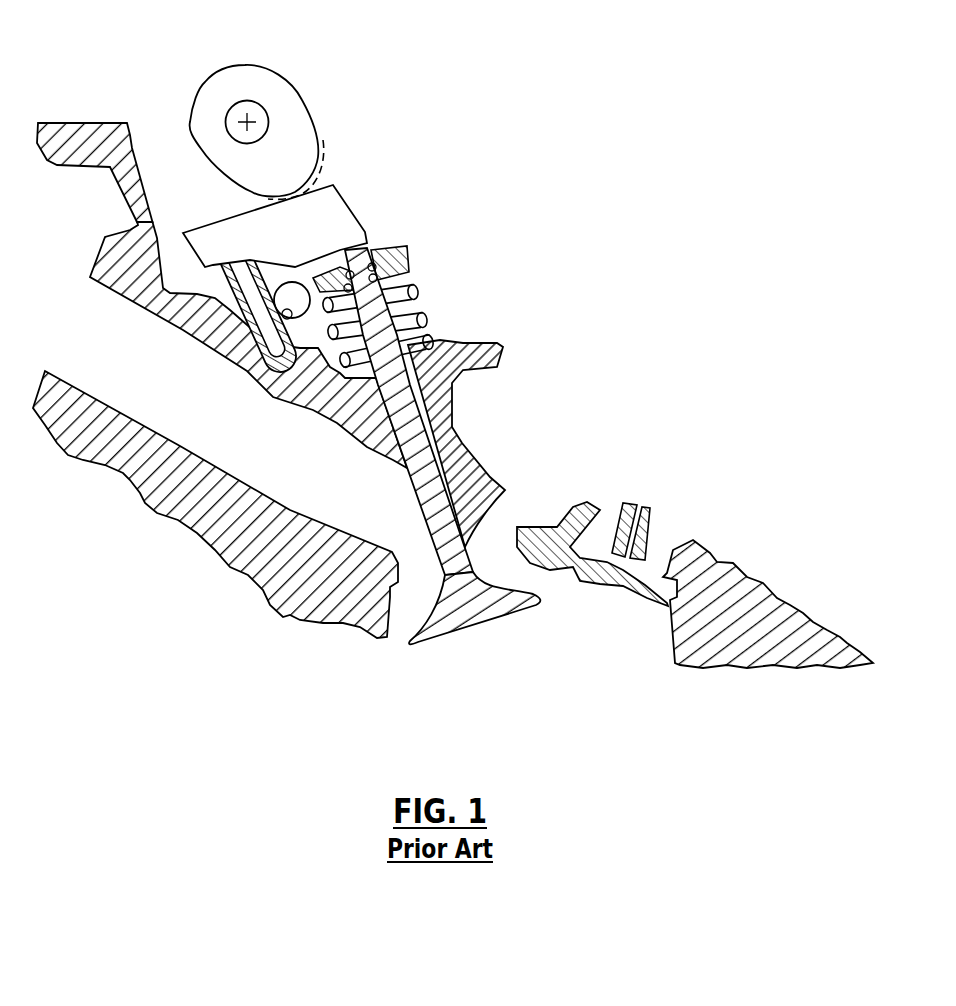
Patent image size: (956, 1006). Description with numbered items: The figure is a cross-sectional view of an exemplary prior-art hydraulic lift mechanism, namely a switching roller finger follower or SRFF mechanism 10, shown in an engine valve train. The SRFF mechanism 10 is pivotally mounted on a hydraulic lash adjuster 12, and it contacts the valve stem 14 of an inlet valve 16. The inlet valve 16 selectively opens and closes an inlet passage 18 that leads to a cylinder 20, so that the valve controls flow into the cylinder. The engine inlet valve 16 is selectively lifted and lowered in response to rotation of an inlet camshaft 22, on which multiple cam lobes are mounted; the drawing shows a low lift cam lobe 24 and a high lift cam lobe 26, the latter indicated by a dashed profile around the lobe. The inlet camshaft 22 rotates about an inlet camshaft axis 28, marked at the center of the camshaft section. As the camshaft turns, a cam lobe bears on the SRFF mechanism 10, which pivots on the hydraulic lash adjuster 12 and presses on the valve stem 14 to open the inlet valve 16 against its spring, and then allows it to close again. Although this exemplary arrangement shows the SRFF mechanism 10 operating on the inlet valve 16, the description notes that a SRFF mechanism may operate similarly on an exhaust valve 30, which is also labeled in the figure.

The SRFF mechanism 10 is at (422, 150).
The hydraulic lash adjuster 12 is at (212, 333).
The valve stem 14 is at (375, 249).
The inlet valve 16 is at (465, 547).
The inlet passage 18 is at (335, 533).
The cylinder 20 is at (677, 633).
The inlet camshaft 22 is at (247, 101).
The low lift cam lobe 24 is at (302, 99).
The high lift cam lobe 26 is at (320, 170).
The inlet camshaft axis 28 is at (242, 118).
The exhaust valve 30 is at (643, 533).